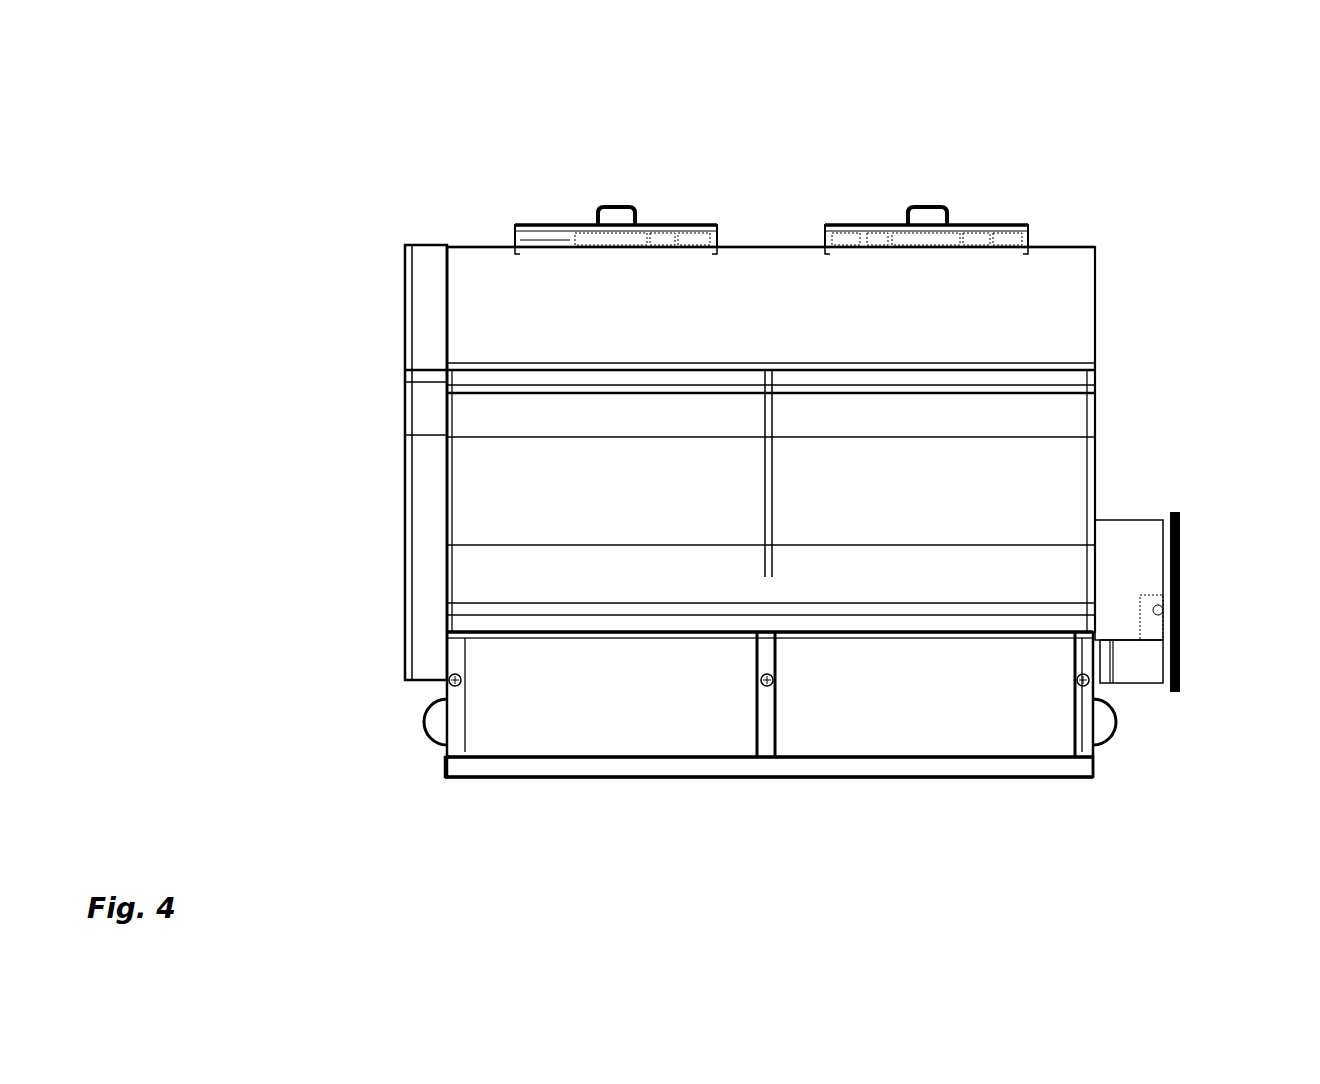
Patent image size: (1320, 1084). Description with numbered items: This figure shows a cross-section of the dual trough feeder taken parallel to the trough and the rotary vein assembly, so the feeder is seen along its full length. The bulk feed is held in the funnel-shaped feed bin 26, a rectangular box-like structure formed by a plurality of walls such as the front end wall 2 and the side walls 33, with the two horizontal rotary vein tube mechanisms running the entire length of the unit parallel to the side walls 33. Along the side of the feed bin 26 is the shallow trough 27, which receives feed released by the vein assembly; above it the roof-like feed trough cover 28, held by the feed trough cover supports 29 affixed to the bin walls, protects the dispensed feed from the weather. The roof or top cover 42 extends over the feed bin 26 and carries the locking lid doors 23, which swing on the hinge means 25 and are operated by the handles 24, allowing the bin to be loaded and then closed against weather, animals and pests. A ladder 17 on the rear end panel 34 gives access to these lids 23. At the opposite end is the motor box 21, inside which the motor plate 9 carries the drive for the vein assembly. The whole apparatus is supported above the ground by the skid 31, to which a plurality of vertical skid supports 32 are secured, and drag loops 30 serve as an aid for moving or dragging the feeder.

The front end wall 2 is at (1095, 258).
The motor plate 9 is at (1143, 640).
The ladder 17 is at (405, 622).
The motor box 21 is at (1178, 560).
The lid doors 23 is at (577, 223).
The handles 24 is at (600, 208).
The hinge means 25 is at (567, 240).
The feed bin 26 is at (767, 308).
The trough 27 is at (636, 582).
The feed trough cover 28 is at (715, 378).
The feed trough cover supports 29 is at (765, 447).
The drag loops 30 is at (1118, 720).
The skid 31 is at (1035, 767).
The vertical skid supports 32 is at (767, 733).
The side walls 33 is at (1045, 290).
The rear end panel 34 is at (447, 327).
The top cover 42 is at (1060, 246).